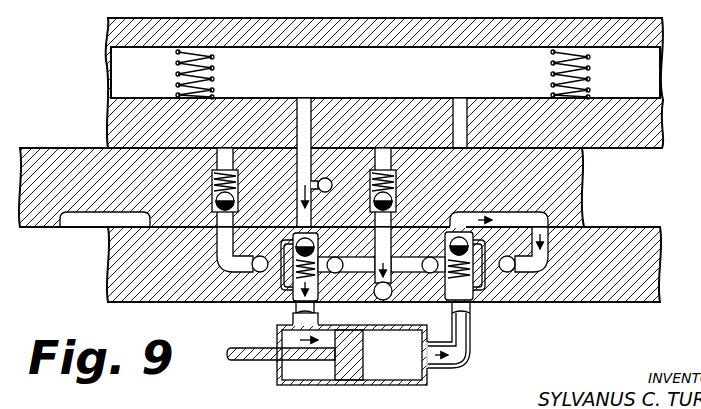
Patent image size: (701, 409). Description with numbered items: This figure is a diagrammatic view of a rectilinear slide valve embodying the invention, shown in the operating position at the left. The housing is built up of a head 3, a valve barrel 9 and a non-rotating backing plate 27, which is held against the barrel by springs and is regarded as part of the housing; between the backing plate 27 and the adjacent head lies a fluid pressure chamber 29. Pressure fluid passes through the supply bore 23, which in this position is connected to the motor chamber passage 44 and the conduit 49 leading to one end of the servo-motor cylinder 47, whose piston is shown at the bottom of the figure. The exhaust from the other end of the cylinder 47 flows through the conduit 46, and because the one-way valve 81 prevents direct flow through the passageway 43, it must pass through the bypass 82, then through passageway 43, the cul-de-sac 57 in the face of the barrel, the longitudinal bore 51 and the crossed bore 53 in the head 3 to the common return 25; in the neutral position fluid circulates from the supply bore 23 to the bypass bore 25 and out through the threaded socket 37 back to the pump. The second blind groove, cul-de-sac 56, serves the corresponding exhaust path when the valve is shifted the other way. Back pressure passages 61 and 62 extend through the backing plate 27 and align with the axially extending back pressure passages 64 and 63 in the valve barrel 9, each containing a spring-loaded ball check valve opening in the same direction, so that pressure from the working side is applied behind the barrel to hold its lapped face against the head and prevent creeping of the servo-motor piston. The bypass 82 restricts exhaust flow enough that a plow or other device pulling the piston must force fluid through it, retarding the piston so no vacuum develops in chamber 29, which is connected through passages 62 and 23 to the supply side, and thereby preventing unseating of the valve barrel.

The head 3 is at (661, 245).
The valve barrel 9 is at (583, 168).
The supply bore 23 is at (325, 148).
The bypass bore 25 is at (374, 279).
The backing plate 27 is at (656, 112).
The fluid pressure chamber 29 is at (528, 62).
The threaded socket 37 is at (392, 298).
The passageway 43 is at (472, 305).
The motor chamber passage 44 is at (295, 305).
The conduit 46 is at (472, 326).
The cylinder 47 is at (279, 372).
The conduit 49 is at (319, 325).
The longitudinal bore 51 is at (548, 234).
The crossed bore 53 is at (405, 257).
The cul-de-sac 56 is at (100, 227).
The cul-de-sac 57 is at (545, 212).
The back pressure passage 61 is at (472, 108).
The back pressure passage 62 is at (294, 118).
The back pressure passage 63 is at (393, 162).
The back pressure passage 64 is at (214, 160).
The one-way valve 81 is at (280, 240).
The bypass 82 is at (280, 278).